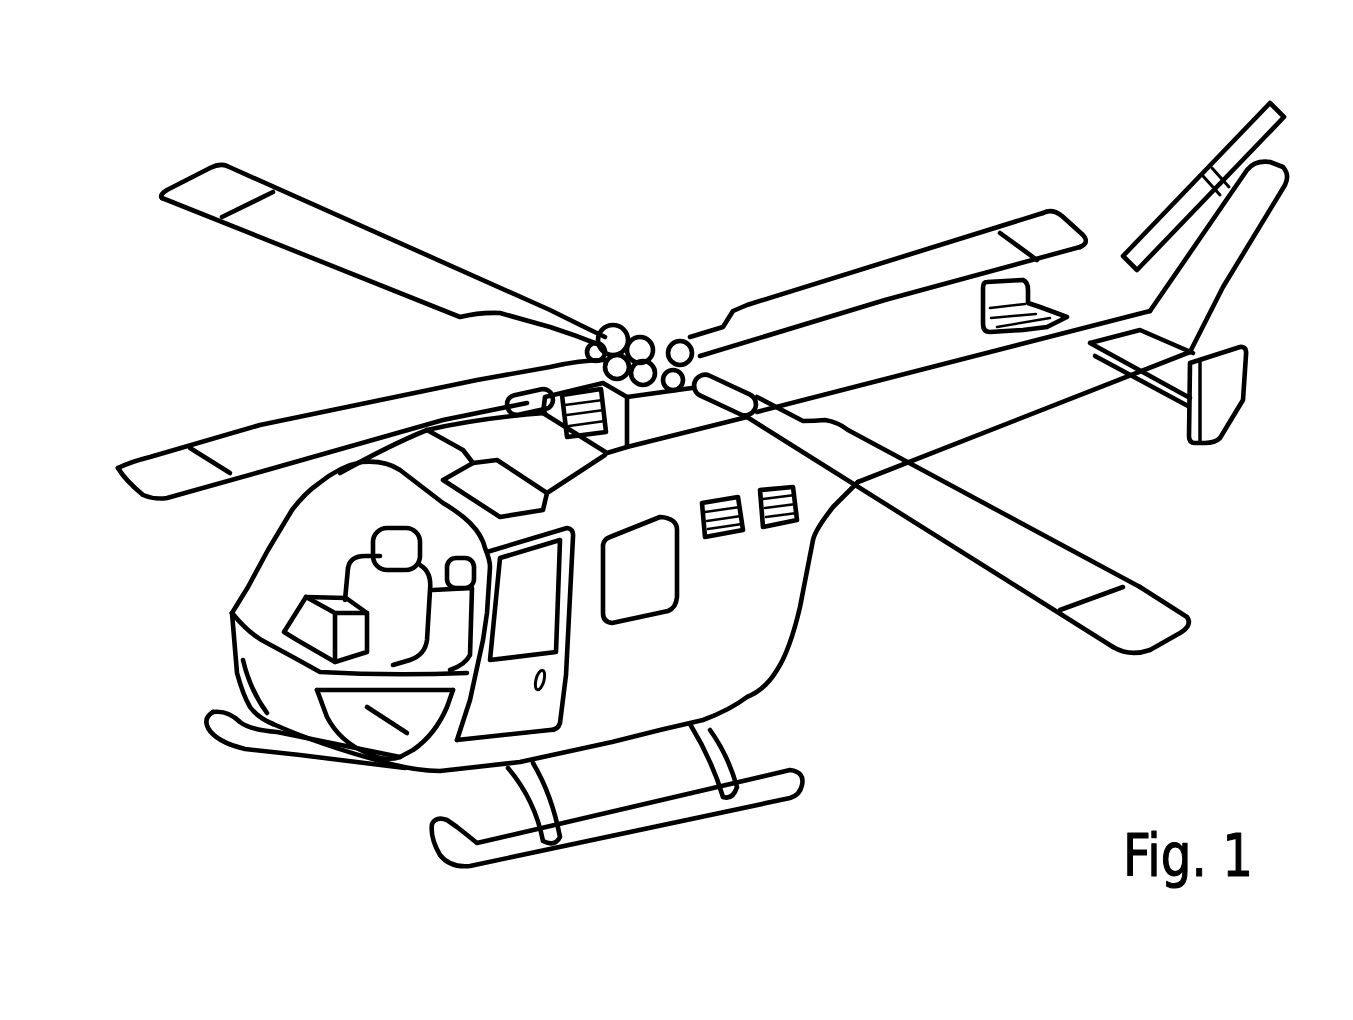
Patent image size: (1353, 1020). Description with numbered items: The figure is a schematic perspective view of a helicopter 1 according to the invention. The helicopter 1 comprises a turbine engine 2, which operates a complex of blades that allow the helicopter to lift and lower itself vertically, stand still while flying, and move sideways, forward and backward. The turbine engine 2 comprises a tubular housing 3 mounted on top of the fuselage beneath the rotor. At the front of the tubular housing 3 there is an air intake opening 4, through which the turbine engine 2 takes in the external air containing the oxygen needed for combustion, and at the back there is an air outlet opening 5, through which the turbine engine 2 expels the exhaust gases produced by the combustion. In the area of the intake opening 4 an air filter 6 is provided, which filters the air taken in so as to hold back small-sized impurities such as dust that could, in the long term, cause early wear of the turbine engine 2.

The helicopter 1 is at (470, 124).
The turbine engine 2 is at (644, 313).
The tubular housing 3 is at (672, 418).
The air intake opening 4 is at (533, 399).
The air outlet opening 5 is at (753, 376).
The air filter 6 is at (597, 430).